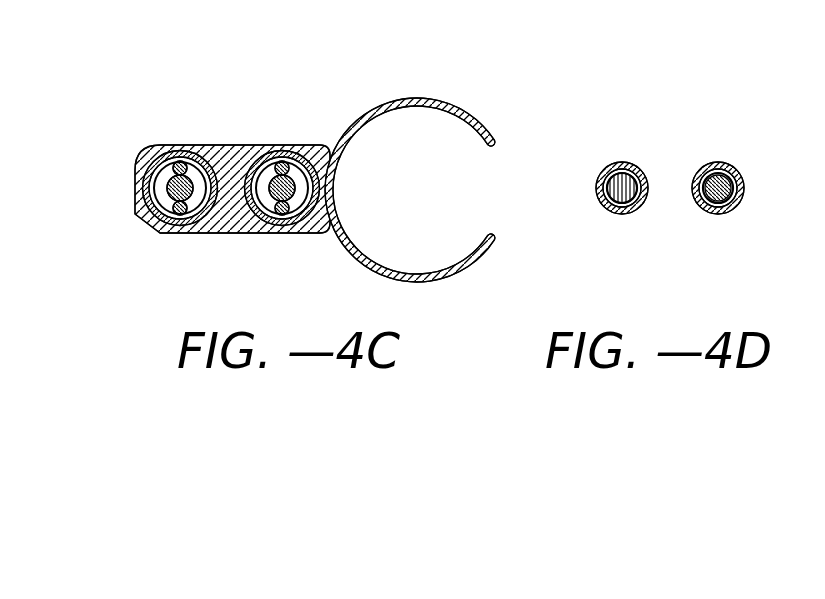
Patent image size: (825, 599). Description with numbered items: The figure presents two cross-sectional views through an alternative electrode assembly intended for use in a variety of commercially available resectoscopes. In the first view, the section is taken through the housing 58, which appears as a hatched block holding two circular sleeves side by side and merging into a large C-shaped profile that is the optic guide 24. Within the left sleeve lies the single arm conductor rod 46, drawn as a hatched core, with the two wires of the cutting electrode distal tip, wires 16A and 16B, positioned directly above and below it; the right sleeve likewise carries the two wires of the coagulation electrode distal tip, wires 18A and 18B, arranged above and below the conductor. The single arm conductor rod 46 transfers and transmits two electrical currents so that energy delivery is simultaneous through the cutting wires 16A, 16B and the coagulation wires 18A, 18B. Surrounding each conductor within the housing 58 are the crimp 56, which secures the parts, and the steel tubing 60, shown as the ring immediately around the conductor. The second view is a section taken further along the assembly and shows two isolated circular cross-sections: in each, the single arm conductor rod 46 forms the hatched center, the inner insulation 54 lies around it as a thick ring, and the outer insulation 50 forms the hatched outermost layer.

In FIG. 4C, the cutting electrode distal tip wire 16A is at (199, 149).
In FIG. 4C, the cutting electrode distal tip wire 16B is at (180, 214).
In FIG. 4C, the coagulation electrode distal tip wire 18A is at (282, 162).
In FIG. 4C, the coagulation electrode distal tip wire 18B is at (282, 215).
In FIG. 4C, the optic guide 24 is at (412, 98).
In FIG. 4C, the single arm conductor rod 46 is at (170, 185).
In FIG. 4D, the single arm conductor rod 46 is at (702, 203).
In FIG. 4D, the outer insulation 50 is at (718, 162).
In FIG. 4D, the inner insulation 54 is at (696, 180).
In FIG. 4C, the crimp 56 is at (140, 158).
In FIG. 4C, the housing 58 is at (175, 146).
In FIG. 4C, the steel tubing 60 is at (146, 195).